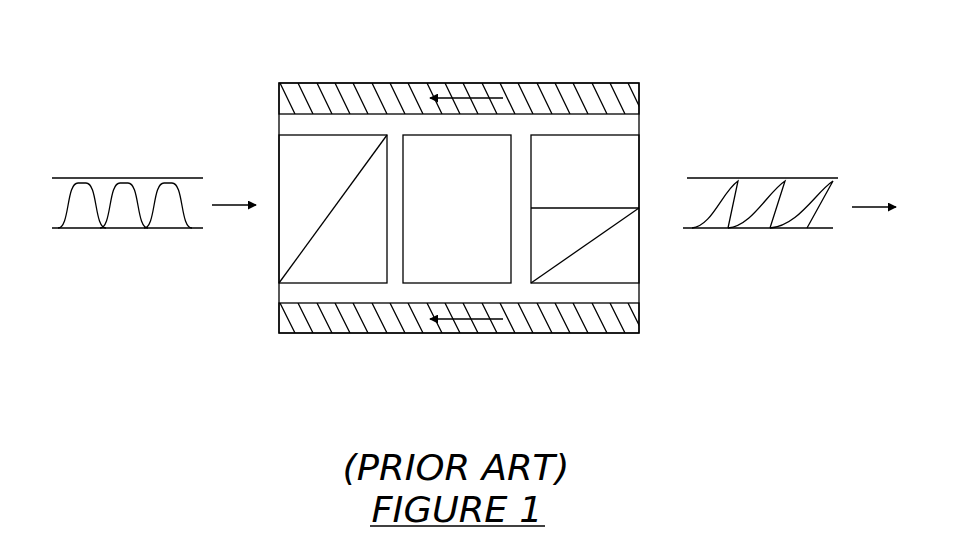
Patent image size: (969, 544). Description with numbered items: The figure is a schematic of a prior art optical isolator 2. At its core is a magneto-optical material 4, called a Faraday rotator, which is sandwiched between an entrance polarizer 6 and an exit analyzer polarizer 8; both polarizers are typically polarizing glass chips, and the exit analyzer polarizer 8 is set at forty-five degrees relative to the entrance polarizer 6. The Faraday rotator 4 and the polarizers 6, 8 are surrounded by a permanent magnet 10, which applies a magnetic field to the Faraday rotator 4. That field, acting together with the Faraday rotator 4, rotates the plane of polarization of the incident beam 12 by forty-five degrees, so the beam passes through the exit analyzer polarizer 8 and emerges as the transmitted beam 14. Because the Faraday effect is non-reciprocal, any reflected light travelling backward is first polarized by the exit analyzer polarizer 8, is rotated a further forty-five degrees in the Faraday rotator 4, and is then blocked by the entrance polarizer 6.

The optical isolator 2 is at (489, 76).
The magneto-optical material 4 is at (472, 273).
The entrance polarizer 6 is at (288, 253).
The exit analyzer polarizer 8 is at (603, 272).
The permanent magnet 10 is at (348, 95).
The incident beam 12 is at (110, 178).
The transmitted beam 14 is at (755, 178).